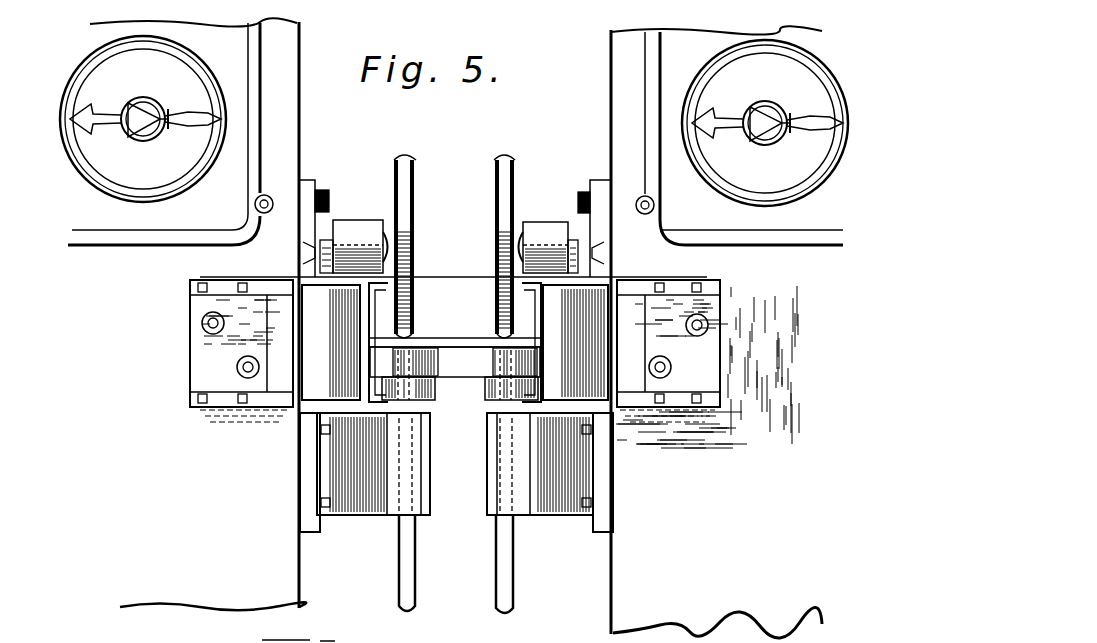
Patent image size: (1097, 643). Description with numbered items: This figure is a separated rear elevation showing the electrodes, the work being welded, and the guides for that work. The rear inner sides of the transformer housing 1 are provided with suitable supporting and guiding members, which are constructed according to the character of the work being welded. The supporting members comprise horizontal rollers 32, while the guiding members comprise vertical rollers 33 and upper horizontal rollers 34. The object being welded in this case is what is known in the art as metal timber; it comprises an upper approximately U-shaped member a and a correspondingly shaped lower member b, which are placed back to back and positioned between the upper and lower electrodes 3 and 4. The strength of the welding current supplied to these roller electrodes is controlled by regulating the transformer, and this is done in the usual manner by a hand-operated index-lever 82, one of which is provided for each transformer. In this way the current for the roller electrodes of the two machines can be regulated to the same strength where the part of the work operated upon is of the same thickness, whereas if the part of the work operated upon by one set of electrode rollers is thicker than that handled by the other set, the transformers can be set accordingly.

The transformer housing 1 is at (455, 328).
The hand-operated index-lever 82 is at (207, 108).
The upper horizontal rollers 34 is at (352, 228).
The upper electrode 3 is at (414, 182).
The lower electrode 4 is at (497, 184).
The vertical rollers 33 is at (459, 406).
The upper approximately U-shaped member a is at (452, 338).
The lower member b is at (455, 362).
The horizontal rollers 32 is at (476, 395).